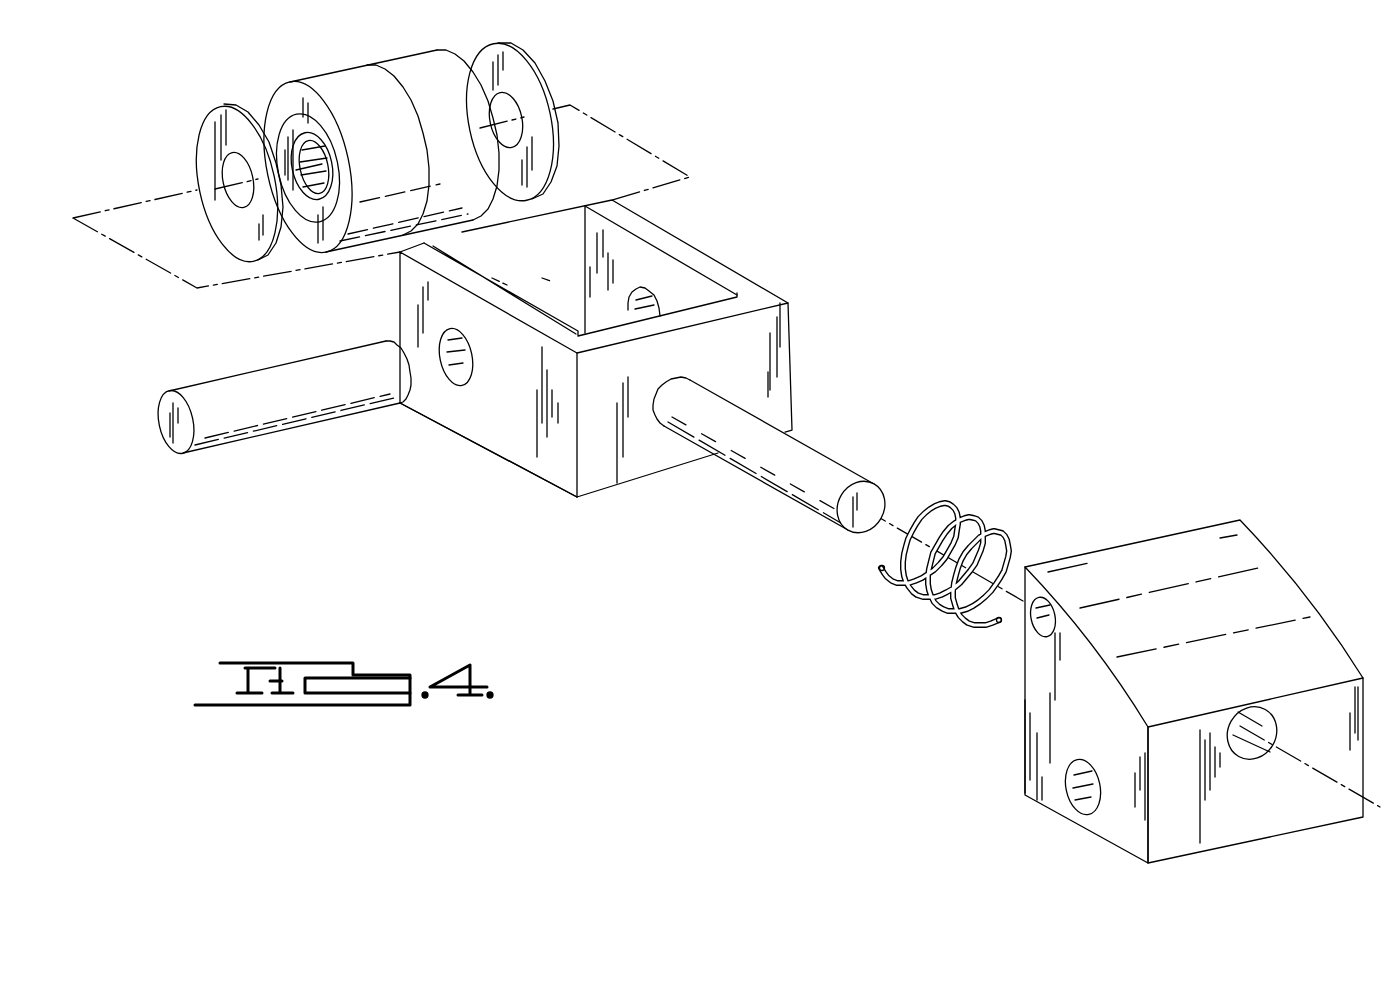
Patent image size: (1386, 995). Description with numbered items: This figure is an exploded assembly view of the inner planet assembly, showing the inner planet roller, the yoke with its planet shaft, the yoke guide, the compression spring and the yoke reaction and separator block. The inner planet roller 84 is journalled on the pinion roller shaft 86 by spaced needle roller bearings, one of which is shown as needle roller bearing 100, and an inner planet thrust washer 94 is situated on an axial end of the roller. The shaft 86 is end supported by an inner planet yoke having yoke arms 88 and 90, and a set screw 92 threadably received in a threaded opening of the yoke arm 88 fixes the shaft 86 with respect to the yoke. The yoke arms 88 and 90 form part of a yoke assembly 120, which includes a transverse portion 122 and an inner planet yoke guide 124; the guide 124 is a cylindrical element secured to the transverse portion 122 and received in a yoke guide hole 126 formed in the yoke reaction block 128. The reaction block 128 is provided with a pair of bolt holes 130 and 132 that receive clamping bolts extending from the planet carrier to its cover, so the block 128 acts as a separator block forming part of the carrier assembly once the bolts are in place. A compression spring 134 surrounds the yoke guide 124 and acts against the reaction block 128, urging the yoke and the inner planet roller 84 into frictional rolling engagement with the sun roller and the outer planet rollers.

The inner planet roller 84 is at (374, 155).
The pinion roller shaft 86 is at (232, 390).
The yoke arm 88 is at (500, 427).
The yoke arm 90 is at (596, 375).
The set screw 92 is at (205, 144).
The inner planet thrust washer 94 is at (545, 78).
The needle roller bearing 100 is at (330, 178).
The yoke assembly 120 is at (553, 485).
The transverse portion 122 is at (645, 452).
The inner planet yoke guide 124 is at (835, 467).
The yoke guide hole 126 is at (1255, 704).
The yoke reaction block 128 is at (1152, 715).
The bolt hole 130 is at (1088, 801).
The bolt hole 132 is at (1043, 627).
The compression spring 134 is at (978, 520).